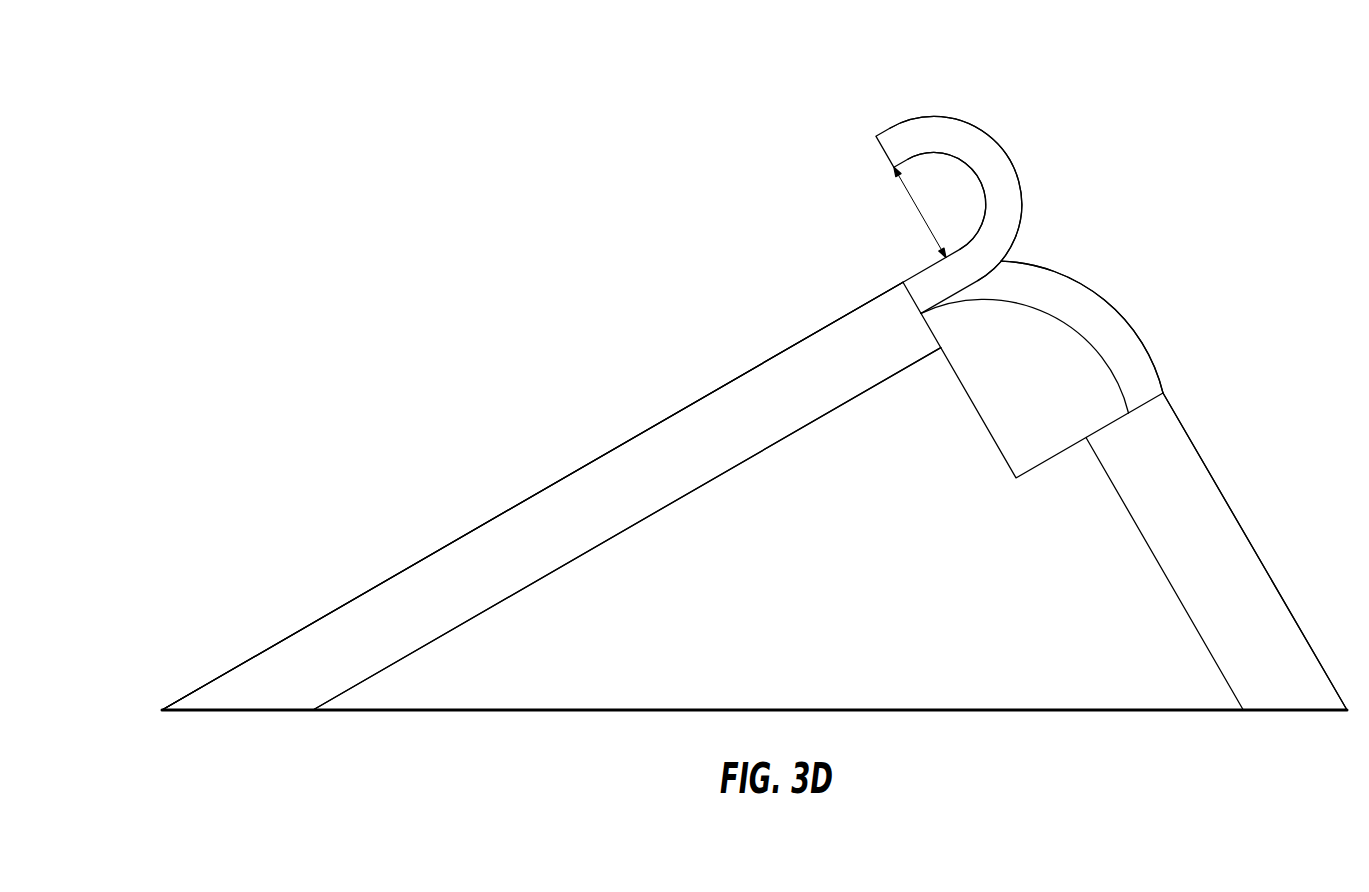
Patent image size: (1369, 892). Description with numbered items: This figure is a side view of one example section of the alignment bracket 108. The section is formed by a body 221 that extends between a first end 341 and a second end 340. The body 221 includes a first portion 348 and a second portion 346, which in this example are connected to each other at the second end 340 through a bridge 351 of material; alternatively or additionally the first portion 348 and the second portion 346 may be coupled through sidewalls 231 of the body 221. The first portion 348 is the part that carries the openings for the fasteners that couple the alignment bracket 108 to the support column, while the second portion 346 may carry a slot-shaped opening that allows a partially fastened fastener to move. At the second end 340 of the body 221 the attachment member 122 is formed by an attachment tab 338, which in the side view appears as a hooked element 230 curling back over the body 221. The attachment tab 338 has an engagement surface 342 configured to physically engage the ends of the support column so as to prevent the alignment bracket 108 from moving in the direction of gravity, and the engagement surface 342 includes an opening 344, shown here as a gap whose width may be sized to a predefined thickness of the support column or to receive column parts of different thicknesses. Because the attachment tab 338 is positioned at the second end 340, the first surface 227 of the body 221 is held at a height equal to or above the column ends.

The alignment bracket 108 is at (192, 122).
The attachment member 122 is at (1080, 175).
The body 221 is at (300, 697).
The first surface 227 is at (1262, 562).
The inclined arm 230 is at (450, 557).
The sidewalls 231 is at (570, 695).
The attachment tab 338 is at (952, 128).
The second end 340 is at (1060, 283).
The first end 341 is at (170, 708).
The engagement surface 342 is at (945, 173).
The opening 344 is at (917, 207).
The second portion 346 is at (1230, 507).
The first portion 348 is at (557, 522).
The bridge 351 is at (1117, 313).